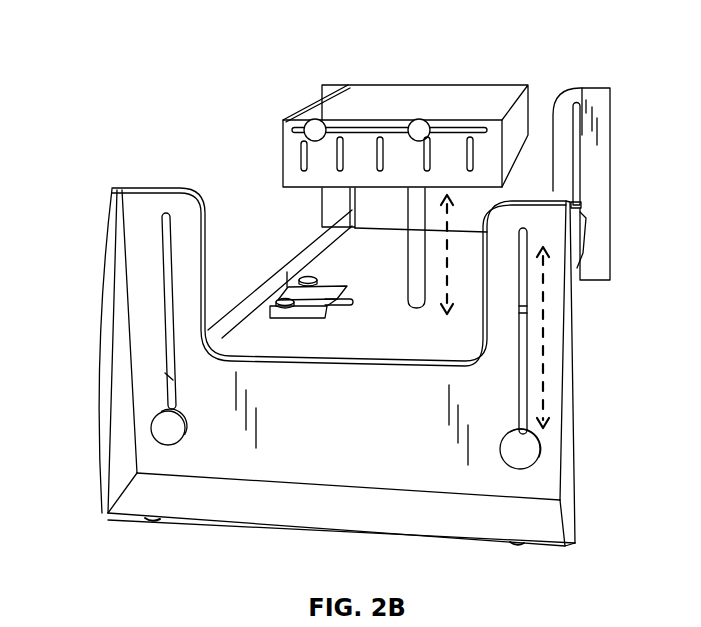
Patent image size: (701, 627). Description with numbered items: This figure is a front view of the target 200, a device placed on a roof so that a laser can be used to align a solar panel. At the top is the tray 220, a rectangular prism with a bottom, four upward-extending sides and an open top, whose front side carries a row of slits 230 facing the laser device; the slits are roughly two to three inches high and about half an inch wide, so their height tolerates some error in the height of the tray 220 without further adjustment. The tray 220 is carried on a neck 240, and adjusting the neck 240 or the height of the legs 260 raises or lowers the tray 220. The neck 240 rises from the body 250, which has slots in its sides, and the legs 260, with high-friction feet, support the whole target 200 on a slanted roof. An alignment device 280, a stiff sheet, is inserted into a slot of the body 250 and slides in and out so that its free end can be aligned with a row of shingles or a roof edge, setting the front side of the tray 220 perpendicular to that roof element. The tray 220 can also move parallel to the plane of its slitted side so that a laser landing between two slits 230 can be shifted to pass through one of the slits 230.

The target 200 is at (479, 58).
The tray 220 is at (283, 167).
The slits 230 is at (470, 150).
The neck 240 is at (407, 205).
The body 250 is at (353, 330).
The legs 260 is at (147, 340).
The alignment device 280 is at (328, 280).